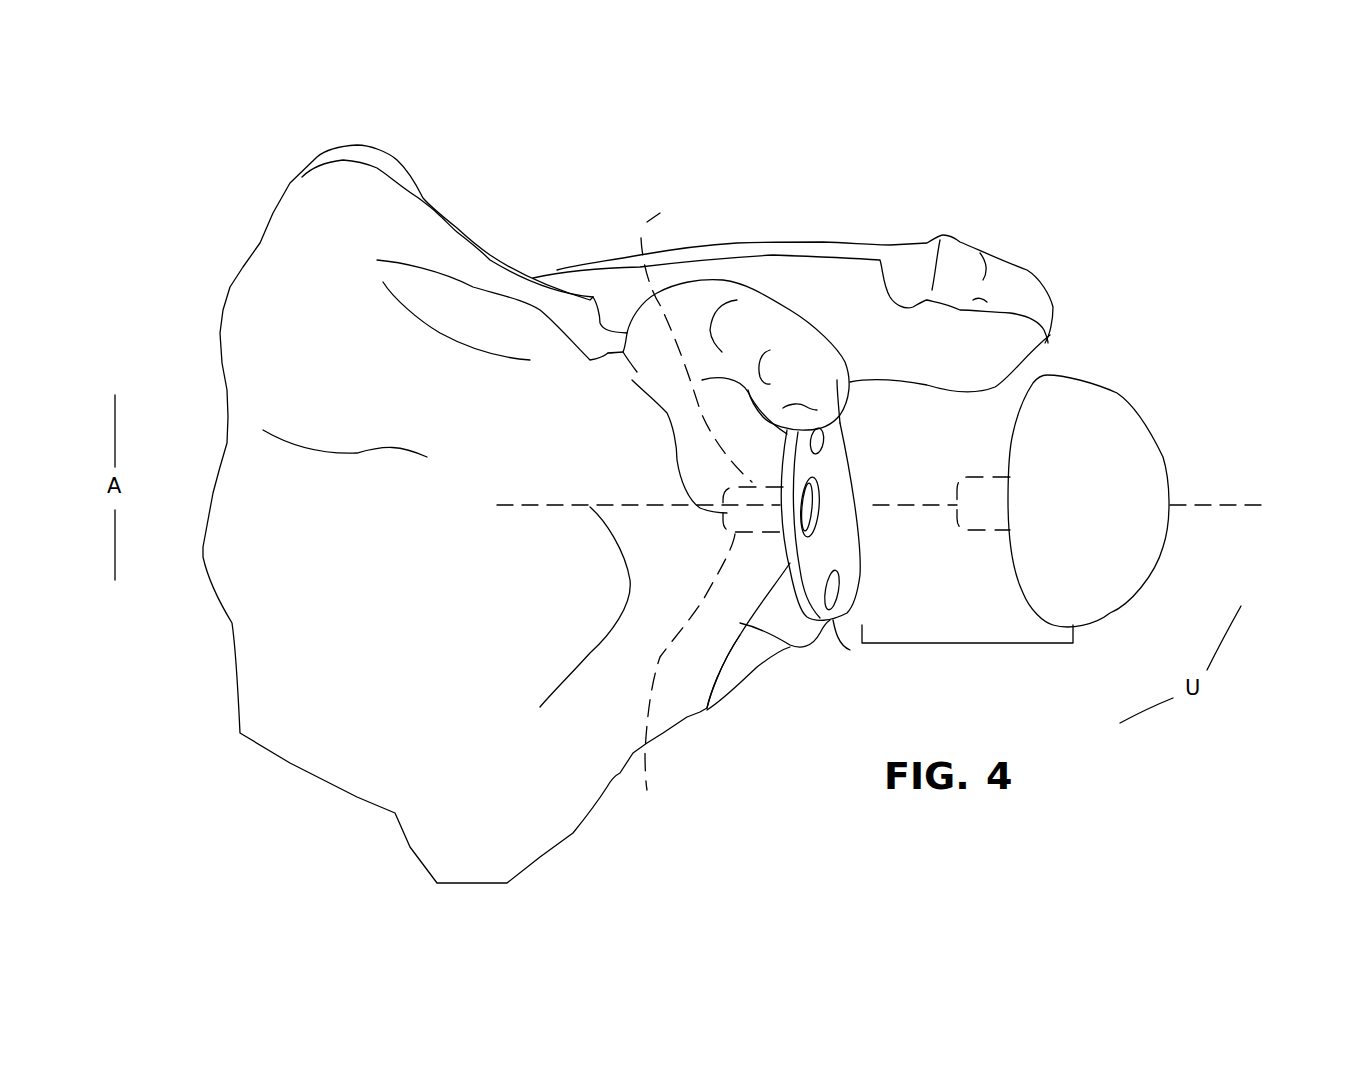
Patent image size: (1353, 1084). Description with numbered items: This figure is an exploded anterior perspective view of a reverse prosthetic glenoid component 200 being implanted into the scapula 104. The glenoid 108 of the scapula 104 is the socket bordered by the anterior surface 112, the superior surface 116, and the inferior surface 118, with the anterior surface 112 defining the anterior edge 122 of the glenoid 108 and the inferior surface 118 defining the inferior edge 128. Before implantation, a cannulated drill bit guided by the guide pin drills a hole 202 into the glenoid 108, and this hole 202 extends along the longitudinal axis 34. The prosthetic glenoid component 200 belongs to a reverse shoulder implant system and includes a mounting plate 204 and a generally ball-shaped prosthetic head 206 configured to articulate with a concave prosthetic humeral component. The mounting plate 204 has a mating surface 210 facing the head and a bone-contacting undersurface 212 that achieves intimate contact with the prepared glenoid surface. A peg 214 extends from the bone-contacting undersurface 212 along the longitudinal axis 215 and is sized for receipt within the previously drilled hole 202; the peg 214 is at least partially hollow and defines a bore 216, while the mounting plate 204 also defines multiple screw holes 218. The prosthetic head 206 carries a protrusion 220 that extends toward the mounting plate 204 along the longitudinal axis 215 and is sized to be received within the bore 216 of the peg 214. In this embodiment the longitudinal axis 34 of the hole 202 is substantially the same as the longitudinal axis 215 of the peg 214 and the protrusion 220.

The scapula 104 is at (267, 710).
The anterior surface 112 is at (519, 566).
The superior surface 116 is at (807, 360).
The inferior surface 118 is at (820, 633).
The anterior edge 122 is at (708, 708).
The inferior edge 128 is at (850, 650).
The prosthetic glenoid component 200 is at (967, 643).
The hole 202 is at (696, 342).
The mounting plate 204 is at (840, 447).
The prosthetic head 206 is at (1103, 443).
The mating surface 210 is at (845, 556).
The bone-contacting undersurface 212 is at (748, 390).
The peg 214 is at (683, 678).
The bore 216 is at (825, 500).
The screw holes 218 is at (826, 426).
The protrusion 220 is at (987, 518).
The glenoid 108 is at (884, 446).
The longitudinal axis 34 is at (1208, 503).
The longitudinal axis 215 is at (908, 467).